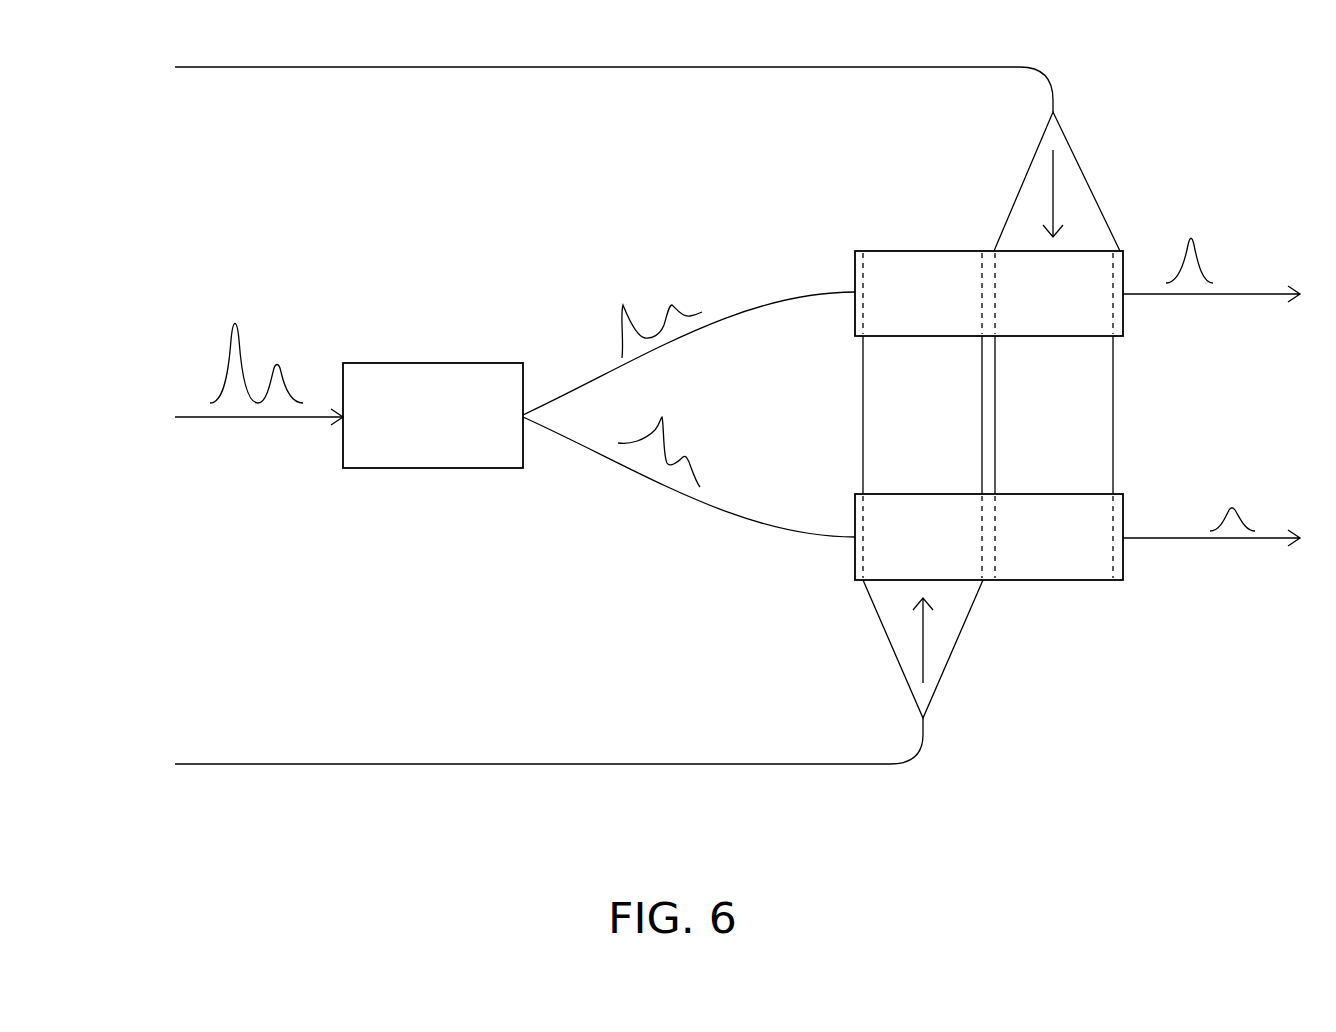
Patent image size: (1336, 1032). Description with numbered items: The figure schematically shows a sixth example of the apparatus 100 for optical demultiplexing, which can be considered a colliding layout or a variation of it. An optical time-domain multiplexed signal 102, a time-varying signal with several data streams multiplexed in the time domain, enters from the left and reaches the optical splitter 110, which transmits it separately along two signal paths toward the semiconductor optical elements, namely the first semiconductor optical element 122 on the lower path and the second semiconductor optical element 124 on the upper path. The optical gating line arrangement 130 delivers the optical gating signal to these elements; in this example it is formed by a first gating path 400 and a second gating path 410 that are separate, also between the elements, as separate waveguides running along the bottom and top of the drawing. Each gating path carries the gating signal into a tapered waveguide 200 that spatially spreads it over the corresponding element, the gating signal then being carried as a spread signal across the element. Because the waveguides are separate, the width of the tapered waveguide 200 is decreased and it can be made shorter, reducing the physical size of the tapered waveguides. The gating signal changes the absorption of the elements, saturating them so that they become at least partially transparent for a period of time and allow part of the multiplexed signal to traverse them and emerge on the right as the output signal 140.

The apparatus 100 is at (1175, 85).
The optical time-domain multiplexed signal 102 is at (176, 347).
The optical splitter 110 is at (382, 353).
The first semiconductor optical element 122 is at (1085, 606).
The second semiconductor optical element 124 is at (915, 238).
The optical gating line arrangement 130 is at (614, 475).
The output signal 140 is at (1219, 258).
The tapered waveguide 200 is at (1016, 141).
The first gating path 400 is at (383, 790).
The second gating path 410 is at (708, 90).